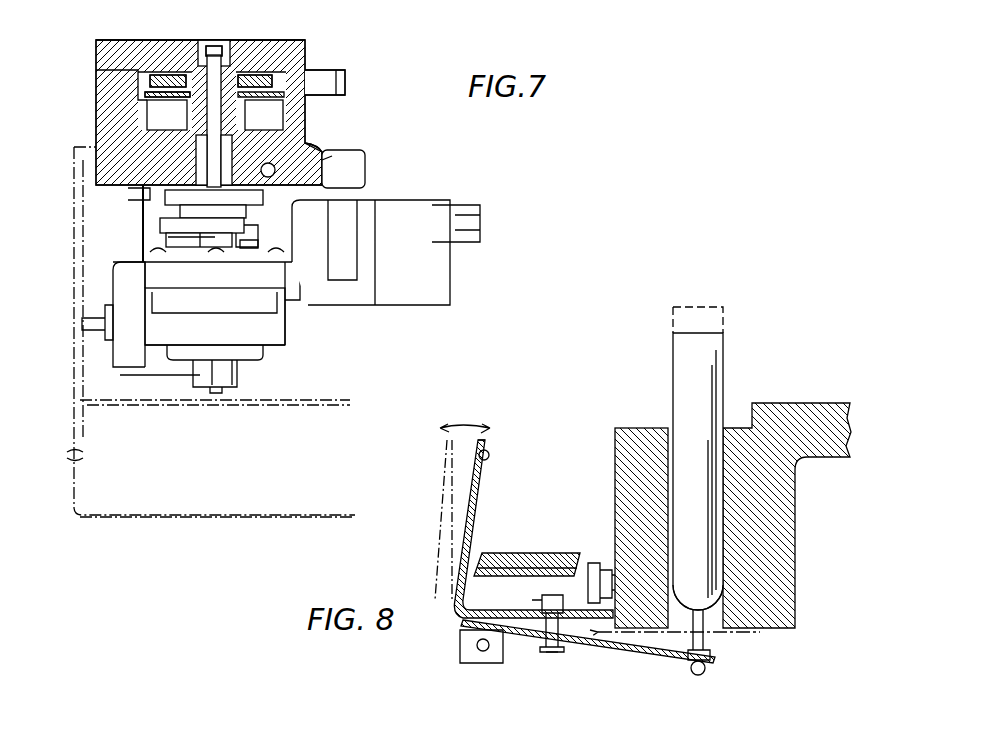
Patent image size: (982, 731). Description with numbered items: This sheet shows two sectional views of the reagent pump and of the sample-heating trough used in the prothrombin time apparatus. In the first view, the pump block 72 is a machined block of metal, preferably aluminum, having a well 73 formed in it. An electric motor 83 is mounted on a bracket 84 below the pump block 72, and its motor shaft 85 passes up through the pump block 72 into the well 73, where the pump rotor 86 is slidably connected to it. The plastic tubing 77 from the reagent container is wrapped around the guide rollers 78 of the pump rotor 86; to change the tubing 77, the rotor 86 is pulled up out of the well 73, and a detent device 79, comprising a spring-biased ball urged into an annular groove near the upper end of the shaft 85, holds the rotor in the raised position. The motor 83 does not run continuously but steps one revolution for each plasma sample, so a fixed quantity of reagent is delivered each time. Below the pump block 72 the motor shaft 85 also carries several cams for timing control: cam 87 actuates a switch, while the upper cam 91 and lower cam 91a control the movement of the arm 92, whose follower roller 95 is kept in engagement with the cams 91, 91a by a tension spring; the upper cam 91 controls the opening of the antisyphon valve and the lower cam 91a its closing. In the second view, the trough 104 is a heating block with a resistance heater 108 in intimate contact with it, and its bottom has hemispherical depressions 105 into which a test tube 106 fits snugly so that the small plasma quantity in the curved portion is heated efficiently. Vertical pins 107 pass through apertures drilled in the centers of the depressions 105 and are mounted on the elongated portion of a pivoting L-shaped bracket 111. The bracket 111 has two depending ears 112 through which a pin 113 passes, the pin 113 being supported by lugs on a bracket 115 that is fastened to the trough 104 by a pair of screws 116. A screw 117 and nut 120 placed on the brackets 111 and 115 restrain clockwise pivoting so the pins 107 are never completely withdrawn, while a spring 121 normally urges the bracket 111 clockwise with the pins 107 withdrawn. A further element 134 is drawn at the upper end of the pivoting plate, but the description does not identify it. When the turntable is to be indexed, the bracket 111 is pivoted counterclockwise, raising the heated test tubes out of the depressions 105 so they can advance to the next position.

In FIG. 7, the pump block 72 is at (96, 103).
In FIG. 7, the well 73 is at (279, 119).
In FIG. 7, the plastic tubing 77 is at (163, 62).
In FIG. 7, the guide rollers 78 is at (178, 73).
In FIG. 7, the detent device 79 is at (242, 75).
In FIG. 7, the electric motor 83 is at (285, 337).
In FIG. 7, the bracket 84 is at (113, 283).
In FIG. 7, the motor shaft 85 is at (225, 44).
In FIG. 7, the pump rotor 86 is at (262, 72).
In FIG. 7, the cam 87 is at (142, 195).
In FIG. 7, the upper cam 91 is at (128, 208).
In FIG. 7, the lower cam 91a is at (168, 228).
In FIG. 7, the arm 92 is at (258, 228).
In FIG. 7, the follower roller 95 is at (343, 169).
In FIG. 7, the resistance heater 108 is at (320, 150).
In FIG. 8, the trough 104 is at (615, 468).
In FIG. 8, the hemispherical depressions 105 is at (718, 599).
In FIG. 8, the test tube 106 is at (718, 356).
In FIG. 8, the vertical pins 107 is at (706, 643).
In FIG. 8, the pivoting L-shaped bracket 111 is at (603, 655).
In FIG. 8, the depending ears 112 is at (478, 663).
In FIG. 8, the pin 113 is at (477, 648).
In FIG. 8, the bracket 115 is at (512, 598).
In FIG. 8, the screws 116 is at (598, 563).
In FIG. 8, the screw 117 is at (550, 655).
In FIG. 8, the nut 120 is at (560, 612).
In FIG. 8, the spring 121 is at (497, 553).
In FIG. 8, the ball 134 is at (491, 455).